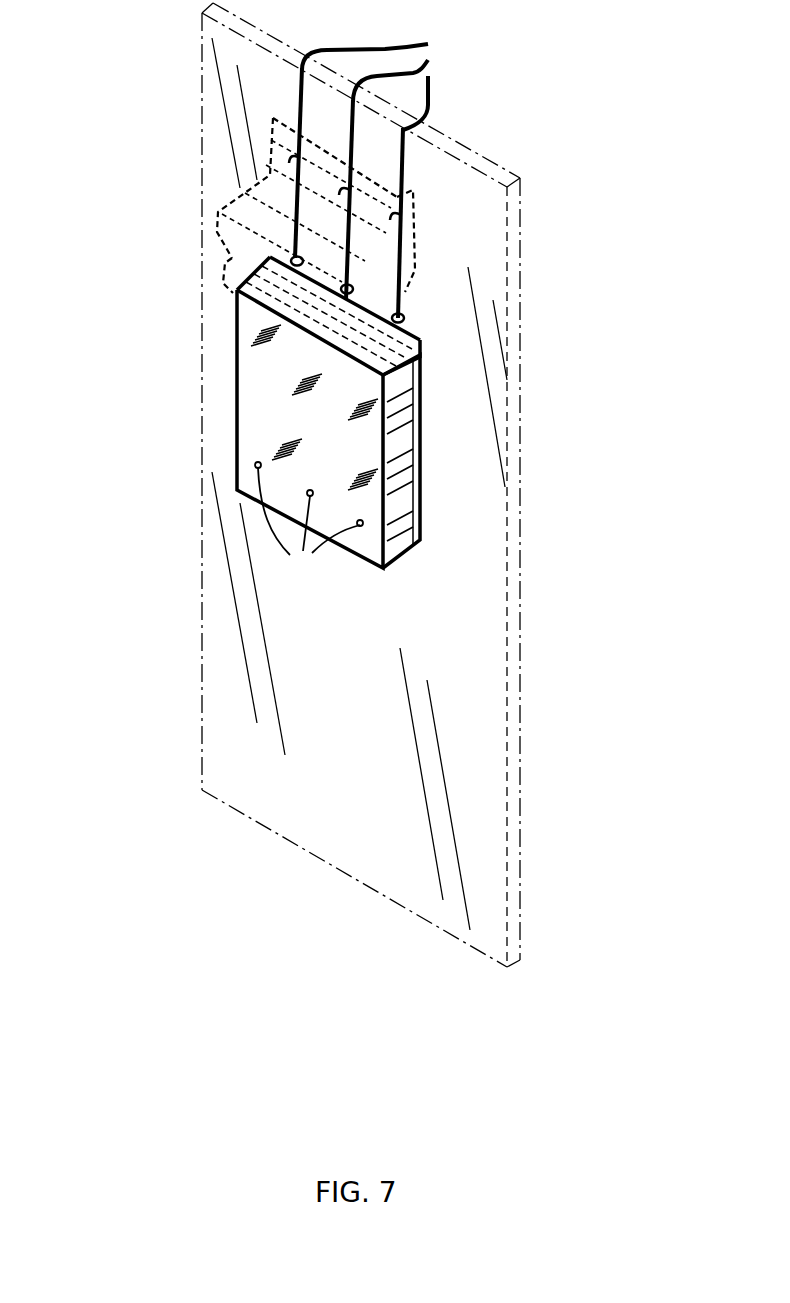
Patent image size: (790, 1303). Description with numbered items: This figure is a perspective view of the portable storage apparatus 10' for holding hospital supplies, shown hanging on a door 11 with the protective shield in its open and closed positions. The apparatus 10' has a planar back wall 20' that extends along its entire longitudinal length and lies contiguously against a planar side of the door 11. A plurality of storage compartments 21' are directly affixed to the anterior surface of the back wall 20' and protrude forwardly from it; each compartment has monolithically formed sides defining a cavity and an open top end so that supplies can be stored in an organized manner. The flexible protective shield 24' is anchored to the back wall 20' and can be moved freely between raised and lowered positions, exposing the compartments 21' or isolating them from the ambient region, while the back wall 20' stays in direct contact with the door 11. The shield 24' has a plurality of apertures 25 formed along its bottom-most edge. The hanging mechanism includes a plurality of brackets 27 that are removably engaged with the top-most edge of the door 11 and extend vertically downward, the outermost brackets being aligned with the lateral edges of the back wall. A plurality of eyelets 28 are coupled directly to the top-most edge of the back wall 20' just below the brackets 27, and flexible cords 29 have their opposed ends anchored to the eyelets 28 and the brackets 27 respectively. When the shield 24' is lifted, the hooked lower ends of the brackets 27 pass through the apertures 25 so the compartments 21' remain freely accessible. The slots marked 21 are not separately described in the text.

The portable storage apparatus 10' is at (353, 335).
The door 11 is at (346, 682).
The planar back wall 20' is at (444, 450).
The ventilation slots 21 is at (515, 478).
The storage compartments 21' is at (509, 476).
The flexible protective shield 24' is at (342, 271).
The apertures 25 is at (295, 257).
The brackets 27 is at (382, 79).
The eyelets 28 is at (309, 530).
The flexible cords 29 is at (296, 192).